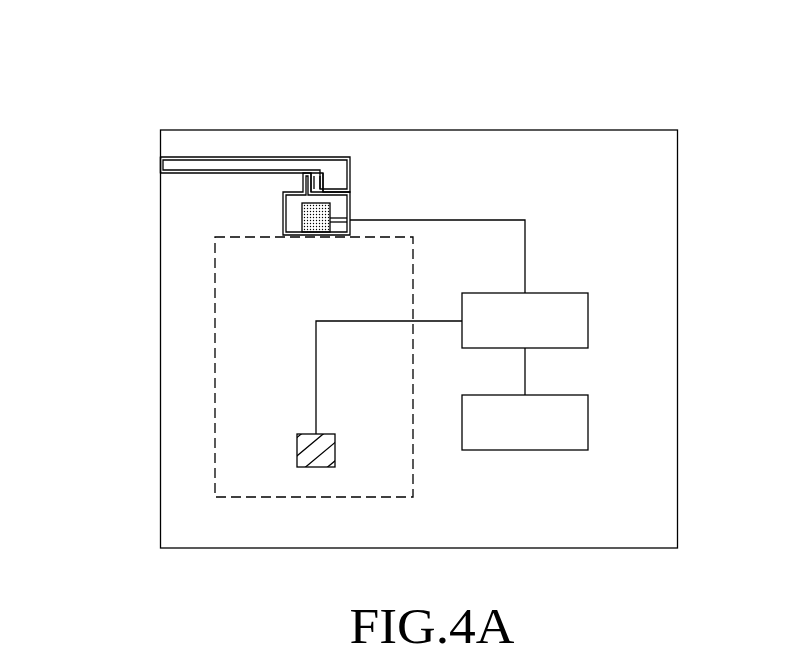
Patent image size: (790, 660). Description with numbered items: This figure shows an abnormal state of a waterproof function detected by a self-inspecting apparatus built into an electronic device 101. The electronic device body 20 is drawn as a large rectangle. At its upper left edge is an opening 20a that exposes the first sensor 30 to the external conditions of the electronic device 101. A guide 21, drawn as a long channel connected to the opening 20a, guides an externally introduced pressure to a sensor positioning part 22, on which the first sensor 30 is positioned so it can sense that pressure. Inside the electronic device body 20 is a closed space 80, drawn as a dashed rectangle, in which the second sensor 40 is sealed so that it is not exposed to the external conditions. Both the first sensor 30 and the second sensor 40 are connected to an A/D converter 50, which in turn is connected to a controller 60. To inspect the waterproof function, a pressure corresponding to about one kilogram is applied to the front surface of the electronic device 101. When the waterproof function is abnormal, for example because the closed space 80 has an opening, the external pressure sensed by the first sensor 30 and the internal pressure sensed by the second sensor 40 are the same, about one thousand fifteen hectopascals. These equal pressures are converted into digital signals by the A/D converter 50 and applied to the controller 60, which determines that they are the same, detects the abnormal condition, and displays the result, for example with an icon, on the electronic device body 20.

The electronic device 101 is at (652, 58).
The electronic device body 20 is at (578, 130).
The opening 20a is at (160, 167).
The guide 21 is at (237, 157).
The sensor positioning part 22 is at (350, 203).
The first sensor 30 is at (314, 210).
The second sensor 40 is at (337, 451).
The A/D converter 50 is at (590, 320).
The controller 60 is at (590, 425).
The closed space 80 is at (382, 265).